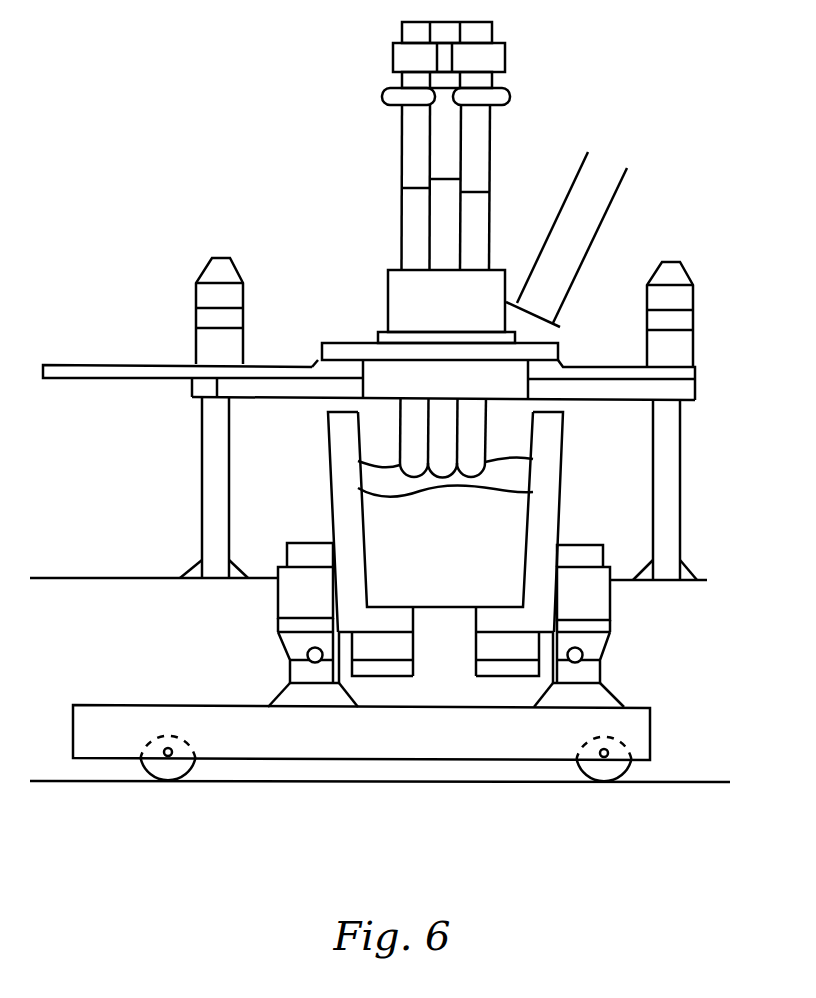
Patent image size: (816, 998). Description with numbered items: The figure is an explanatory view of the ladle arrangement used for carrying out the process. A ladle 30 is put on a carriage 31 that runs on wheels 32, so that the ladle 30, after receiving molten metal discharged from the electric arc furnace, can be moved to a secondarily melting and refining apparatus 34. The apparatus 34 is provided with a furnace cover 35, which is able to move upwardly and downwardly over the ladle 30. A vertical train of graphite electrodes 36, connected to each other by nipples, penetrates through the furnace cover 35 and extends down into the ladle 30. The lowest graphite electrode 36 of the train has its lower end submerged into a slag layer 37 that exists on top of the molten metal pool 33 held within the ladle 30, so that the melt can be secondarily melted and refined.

The ladle 30 is at (548, 522).
The carriage 31 is at (465, 750).
The wheels 32 is at (170, 773).
The molten metal pool 33 is at (493, 587).
The secondarily melting and refining apparatus 34 is at (386, 258).
The furnace cover 35 is at (478, 372).
The graphite electrodes 36 is at (483, 220).
The slag layer 37 is at (513, 478).